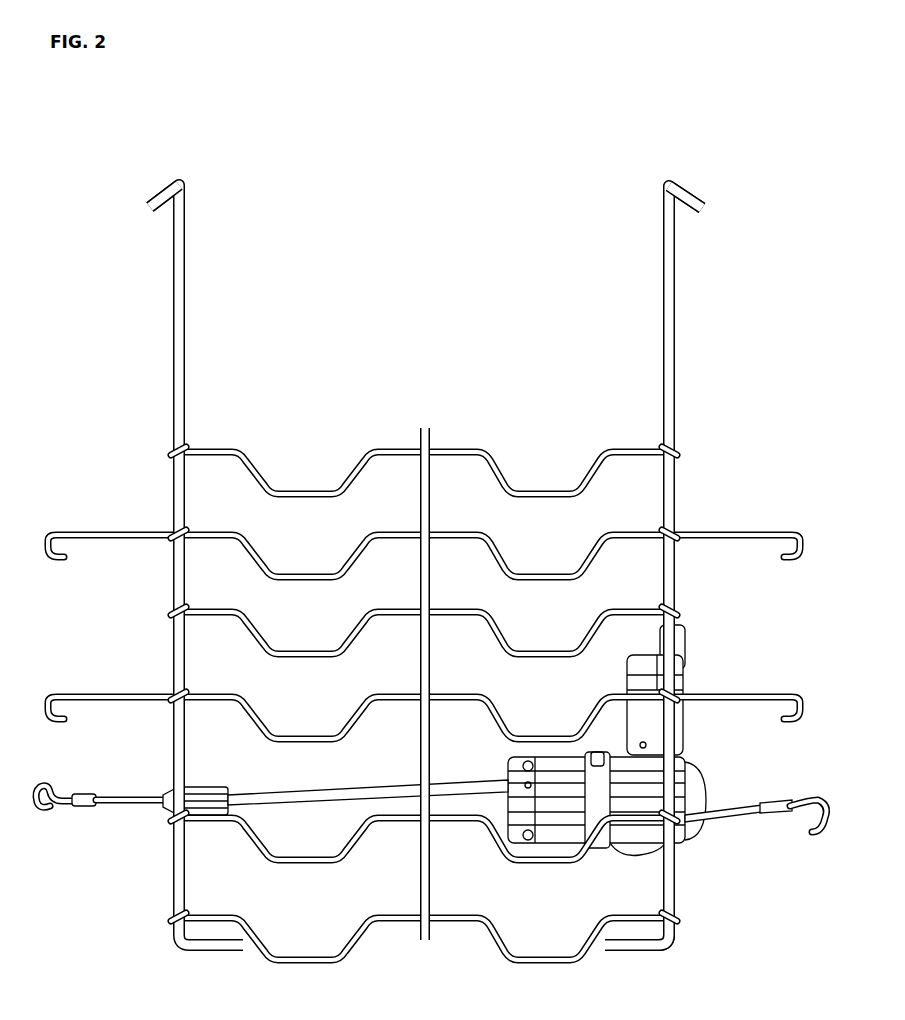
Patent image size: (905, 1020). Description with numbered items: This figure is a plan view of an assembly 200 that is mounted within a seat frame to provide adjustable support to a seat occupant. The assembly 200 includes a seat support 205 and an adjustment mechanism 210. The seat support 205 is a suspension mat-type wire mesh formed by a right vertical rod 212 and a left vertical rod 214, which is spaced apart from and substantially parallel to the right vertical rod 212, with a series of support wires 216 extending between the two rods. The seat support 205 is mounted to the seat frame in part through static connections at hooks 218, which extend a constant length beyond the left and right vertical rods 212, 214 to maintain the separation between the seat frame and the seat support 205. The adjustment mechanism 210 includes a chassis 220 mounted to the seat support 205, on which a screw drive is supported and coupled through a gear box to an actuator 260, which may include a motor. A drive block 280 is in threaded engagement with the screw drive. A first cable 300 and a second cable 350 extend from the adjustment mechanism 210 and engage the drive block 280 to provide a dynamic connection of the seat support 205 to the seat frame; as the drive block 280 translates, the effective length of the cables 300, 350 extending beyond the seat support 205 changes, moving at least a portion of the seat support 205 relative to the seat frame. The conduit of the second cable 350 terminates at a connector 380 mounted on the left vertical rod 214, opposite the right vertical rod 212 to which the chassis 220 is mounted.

The assembly 200 is at (492, 137).
The seat support 205 is at (169, 541).
The adjustment mechanism 210 is at (675, 531).
The right vertical rod 212 is at (669, 185).
The left vertical rod 214 is at (182, 185).
The support wires 216 is at (213, 528).
The hooks 218 is at (46, 534).
The chassis 220 is at (676, 862).
The actuator 260 is at (684, 687).
The drive block 280 is at (610, 850).
The first cable 300 is at (738, 808).
The second cable 350 is at (255, 796).
The connector 380 is at (172, 816).